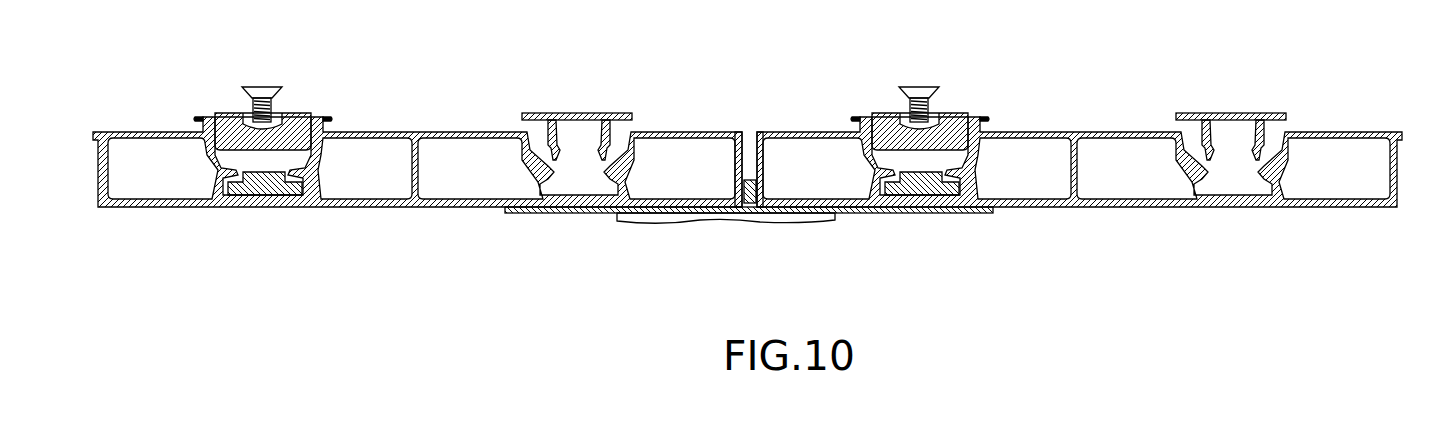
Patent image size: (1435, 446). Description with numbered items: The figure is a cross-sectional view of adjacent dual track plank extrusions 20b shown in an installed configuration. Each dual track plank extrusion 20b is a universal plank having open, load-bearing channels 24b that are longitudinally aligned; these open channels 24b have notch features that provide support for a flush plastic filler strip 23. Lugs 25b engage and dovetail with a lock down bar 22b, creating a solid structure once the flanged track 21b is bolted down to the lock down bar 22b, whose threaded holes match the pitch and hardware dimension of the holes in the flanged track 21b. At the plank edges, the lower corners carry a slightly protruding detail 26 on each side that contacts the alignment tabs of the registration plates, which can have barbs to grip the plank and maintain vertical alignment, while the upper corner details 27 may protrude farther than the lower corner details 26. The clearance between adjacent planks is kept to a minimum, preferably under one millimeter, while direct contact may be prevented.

The dual track plank extrusion 20b is at (663, 132).
The flanged track 21b is at (298, 114).
The lock down bar 22b is at (261, 190).
The filler strip 23 is at (572, 111).
The open load-bearing channels 24b is at (615, 145).
The lugs 25b is at (607, 168).
The protruding detail 26 is at (752, 186).
The upper corner details 27 is at (757, 132).